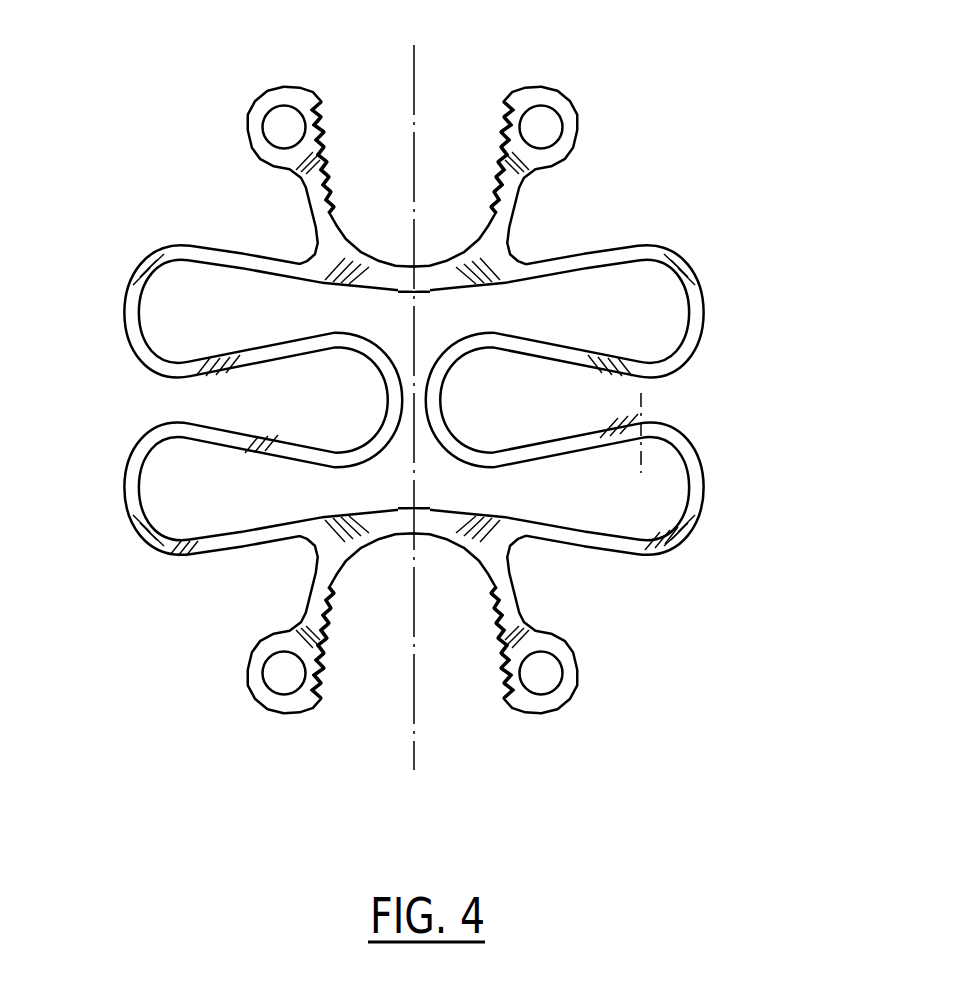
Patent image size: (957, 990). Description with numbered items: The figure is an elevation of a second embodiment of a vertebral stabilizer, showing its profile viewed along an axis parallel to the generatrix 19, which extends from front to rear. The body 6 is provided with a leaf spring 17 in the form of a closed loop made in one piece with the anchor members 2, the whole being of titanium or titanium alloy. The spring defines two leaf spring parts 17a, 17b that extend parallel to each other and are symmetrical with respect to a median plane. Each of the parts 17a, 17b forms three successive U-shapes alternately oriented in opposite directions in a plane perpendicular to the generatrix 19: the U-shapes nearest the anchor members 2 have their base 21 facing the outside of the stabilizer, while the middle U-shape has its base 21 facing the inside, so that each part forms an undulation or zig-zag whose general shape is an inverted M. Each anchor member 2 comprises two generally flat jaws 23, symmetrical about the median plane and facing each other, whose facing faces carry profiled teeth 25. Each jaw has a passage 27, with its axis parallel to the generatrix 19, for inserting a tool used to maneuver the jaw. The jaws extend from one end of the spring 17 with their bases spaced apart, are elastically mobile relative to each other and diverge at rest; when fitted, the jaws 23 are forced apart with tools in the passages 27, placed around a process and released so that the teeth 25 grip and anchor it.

The anchor member 2 is at (453, 400).
The body 6 is at (717, 437).
The leaf spring 17 is at (425, 378).
The leaf spring part 17a is at (126, 313).
The leaf spring part 17b is at (700, 277).
The generatrix 19 is at (652, 432).
The base 21 is at (700, 316).
The jaw 23 is at (310, 173).
The profiled teeth 25 is at (328, 148).
The passage 27 is at (286, 124).